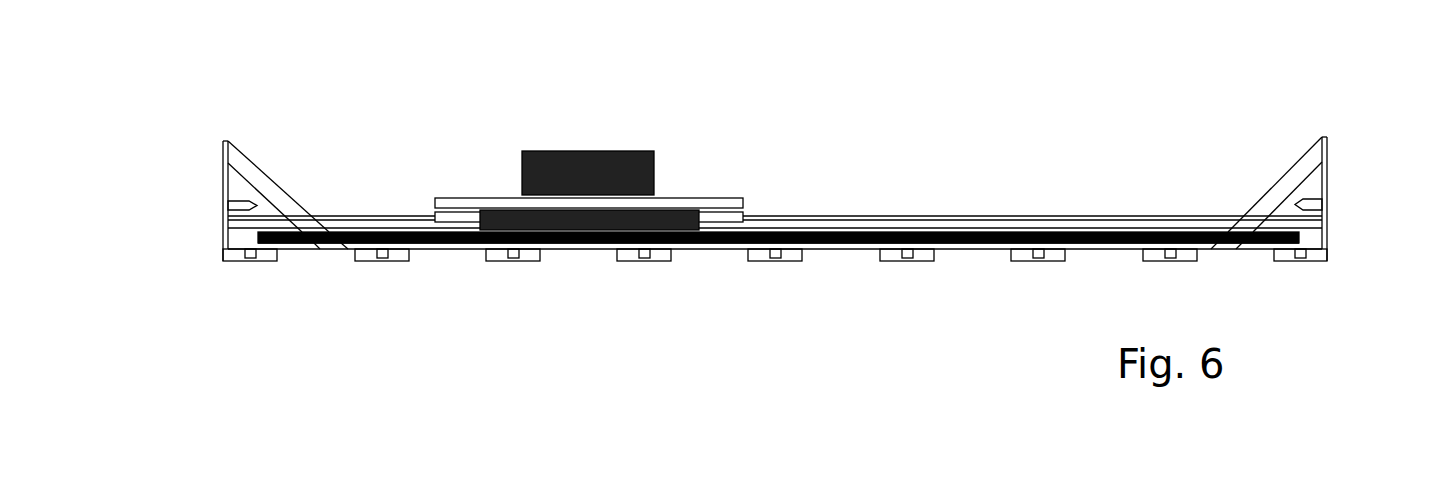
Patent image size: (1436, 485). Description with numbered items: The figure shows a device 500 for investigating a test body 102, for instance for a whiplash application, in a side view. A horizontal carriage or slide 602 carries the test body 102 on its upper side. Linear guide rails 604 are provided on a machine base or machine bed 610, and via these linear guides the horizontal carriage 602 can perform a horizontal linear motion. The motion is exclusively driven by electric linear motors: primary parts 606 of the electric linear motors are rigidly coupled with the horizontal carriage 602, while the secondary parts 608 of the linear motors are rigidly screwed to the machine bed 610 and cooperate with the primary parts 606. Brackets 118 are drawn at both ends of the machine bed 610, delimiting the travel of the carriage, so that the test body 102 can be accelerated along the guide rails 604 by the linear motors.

The device for investigating a test body 500 is at (1022, 59).
The test body 102 is at (878, 110).
The bracket 118 is at (233, 213).
The horizontal carriage 602 is at (502, 198).
The linear guide rails 604 is at (853, 217).
The primary parts of electric linear motors 606 is at (596, 229).
The secondary parts of the linear motors 608 is at (947, 240).
The machine bed 610 is at (970, 231).